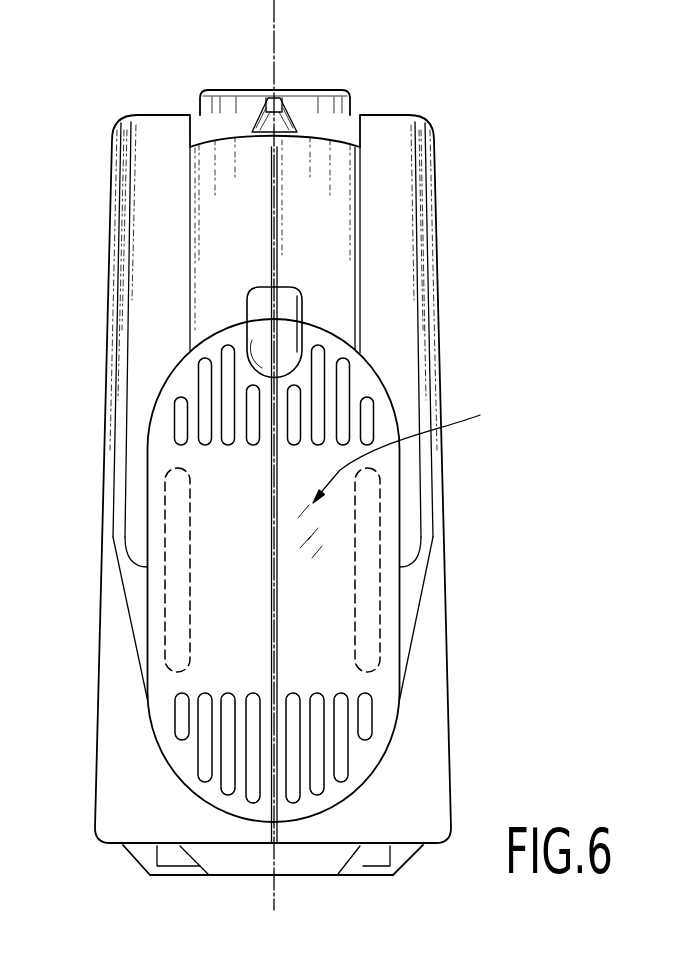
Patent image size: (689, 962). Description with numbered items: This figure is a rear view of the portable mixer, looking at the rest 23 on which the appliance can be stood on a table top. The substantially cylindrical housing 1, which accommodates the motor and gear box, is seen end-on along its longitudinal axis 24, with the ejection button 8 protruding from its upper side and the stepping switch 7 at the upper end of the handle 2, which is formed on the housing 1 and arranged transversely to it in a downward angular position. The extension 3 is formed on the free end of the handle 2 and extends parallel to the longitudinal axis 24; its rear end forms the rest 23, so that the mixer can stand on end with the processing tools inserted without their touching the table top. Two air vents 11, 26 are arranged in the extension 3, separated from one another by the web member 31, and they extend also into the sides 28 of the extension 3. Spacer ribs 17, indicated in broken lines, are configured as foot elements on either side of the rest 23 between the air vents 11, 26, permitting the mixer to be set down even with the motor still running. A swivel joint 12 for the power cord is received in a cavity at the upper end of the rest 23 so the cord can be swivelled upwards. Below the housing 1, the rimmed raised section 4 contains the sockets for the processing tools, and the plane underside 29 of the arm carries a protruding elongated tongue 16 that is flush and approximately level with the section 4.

The housing 1 is at (398, 292).
The handle 2 is at (340, 210).
The extension 3 is at (384, 720).
The raised section 4 is at (378, 857).
The stepping switch 7 is at (258, 96).
The ejection button 8 is at (348, 110).
The air vent 11 is at (180, 412).
The swivel joint 12 is at (262, 318).
The tongue 16 is at (243, 860).
The spacer ribs 17 is at (168, 613).
The rest 23 is at (409, 449).
The longitudinal axis 24 is at (281, 31).
The air vent 26 is at (178, 730).
The sides of the extension 28 is at (147, 510).
The plane underside of the arm 29 is at (167, 848).
The web member 31 is at (323, 622).